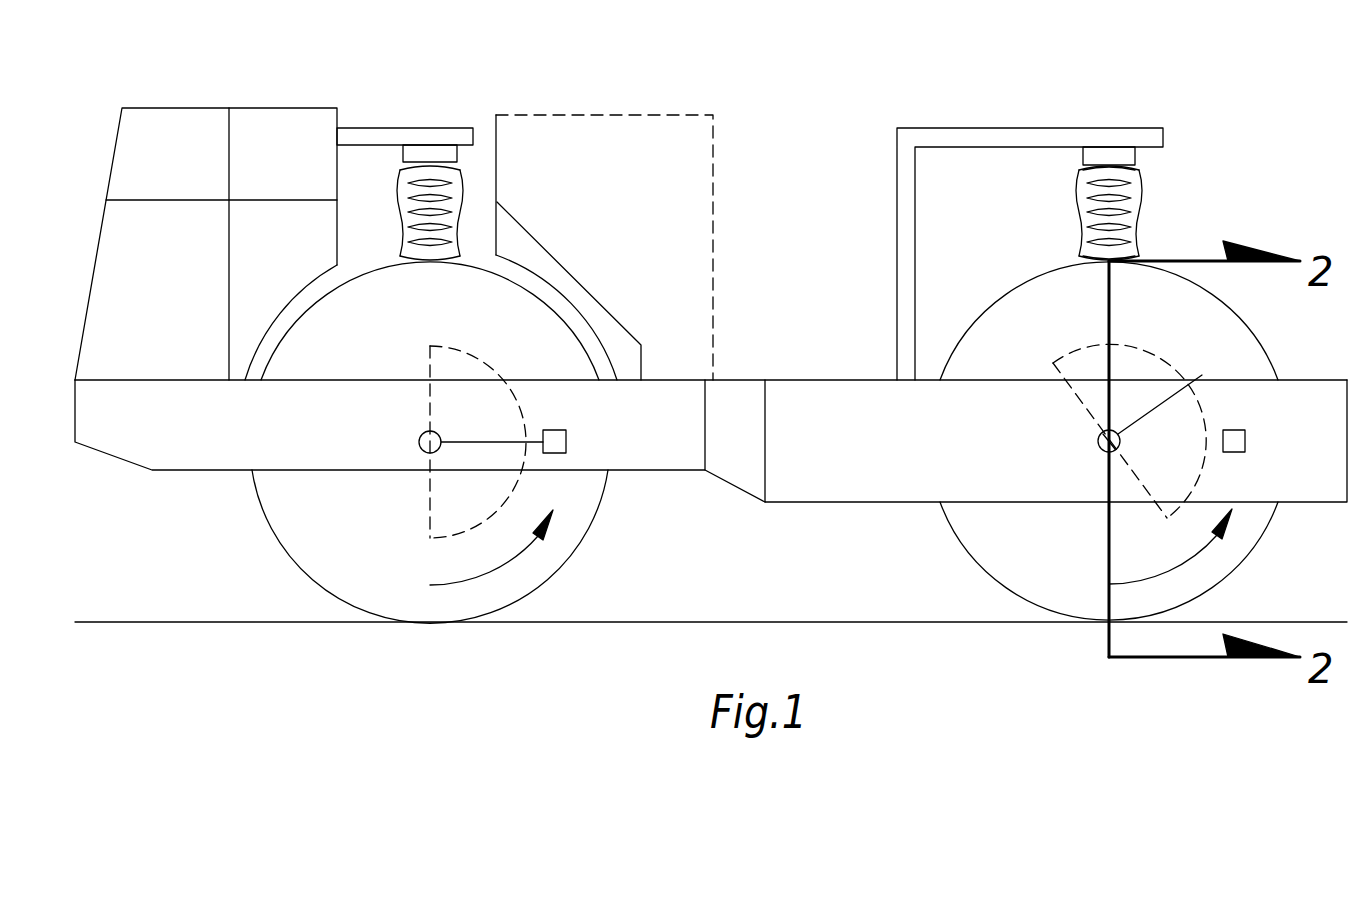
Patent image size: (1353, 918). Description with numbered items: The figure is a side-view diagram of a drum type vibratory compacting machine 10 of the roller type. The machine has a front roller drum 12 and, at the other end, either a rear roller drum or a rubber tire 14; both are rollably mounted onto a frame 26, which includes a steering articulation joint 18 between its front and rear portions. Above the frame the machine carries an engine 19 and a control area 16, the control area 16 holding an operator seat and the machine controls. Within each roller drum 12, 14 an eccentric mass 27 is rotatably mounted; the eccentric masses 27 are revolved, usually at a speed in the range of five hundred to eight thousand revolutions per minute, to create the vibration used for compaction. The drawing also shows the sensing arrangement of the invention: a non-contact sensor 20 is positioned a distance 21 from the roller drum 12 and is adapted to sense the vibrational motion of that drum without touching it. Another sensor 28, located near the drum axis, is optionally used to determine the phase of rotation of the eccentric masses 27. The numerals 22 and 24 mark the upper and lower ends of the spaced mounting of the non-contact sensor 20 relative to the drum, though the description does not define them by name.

The drum type vibratory compacting machine 10 is at (994, 50).
The front roller drum 12 is at (1258, 548).
The rear roller drum 14 is at (572, 563).
The control area 16 is at (713, 117).
The steering articulation joint 18 is at (728, 487).
The engine 19 is at (101, 223).
The non-contact sensor 20 is at (457, 157).
The distance 21 is at (392, 166).
The upper end of isolation mount 22 is at (1082, 171).
The lower end of isolation mount 24 is at (1080, 258).
The frame 26 is at (908, 503).
The eccentric masses 27 is at (483, 356).
The sensor 28 is at (567, 437).